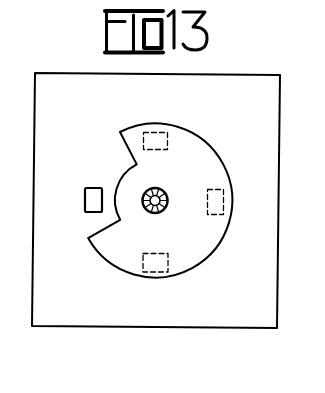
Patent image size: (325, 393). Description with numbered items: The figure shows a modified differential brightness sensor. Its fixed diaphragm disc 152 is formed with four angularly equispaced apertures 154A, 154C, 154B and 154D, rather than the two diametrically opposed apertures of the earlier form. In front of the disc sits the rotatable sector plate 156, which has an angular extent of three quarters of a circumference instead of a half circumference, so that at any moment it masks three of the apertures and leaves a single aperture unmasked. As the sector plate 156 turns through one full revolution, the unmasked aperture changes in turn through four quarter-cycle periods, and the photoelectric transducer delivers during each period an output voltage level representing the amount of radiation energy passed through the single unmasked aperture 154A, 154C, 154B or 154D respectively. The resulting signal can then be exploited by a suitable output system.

The fixed diaphragm disc 152 is at (80, 72).
The rotatable sector plate 156 is at (210, 146).
The aperture 154A is at (162, 149).
The aperture 154B is at (162, 257).
The aperture 154C is at (206, 216).
The aperture 154D is at (85, 188).